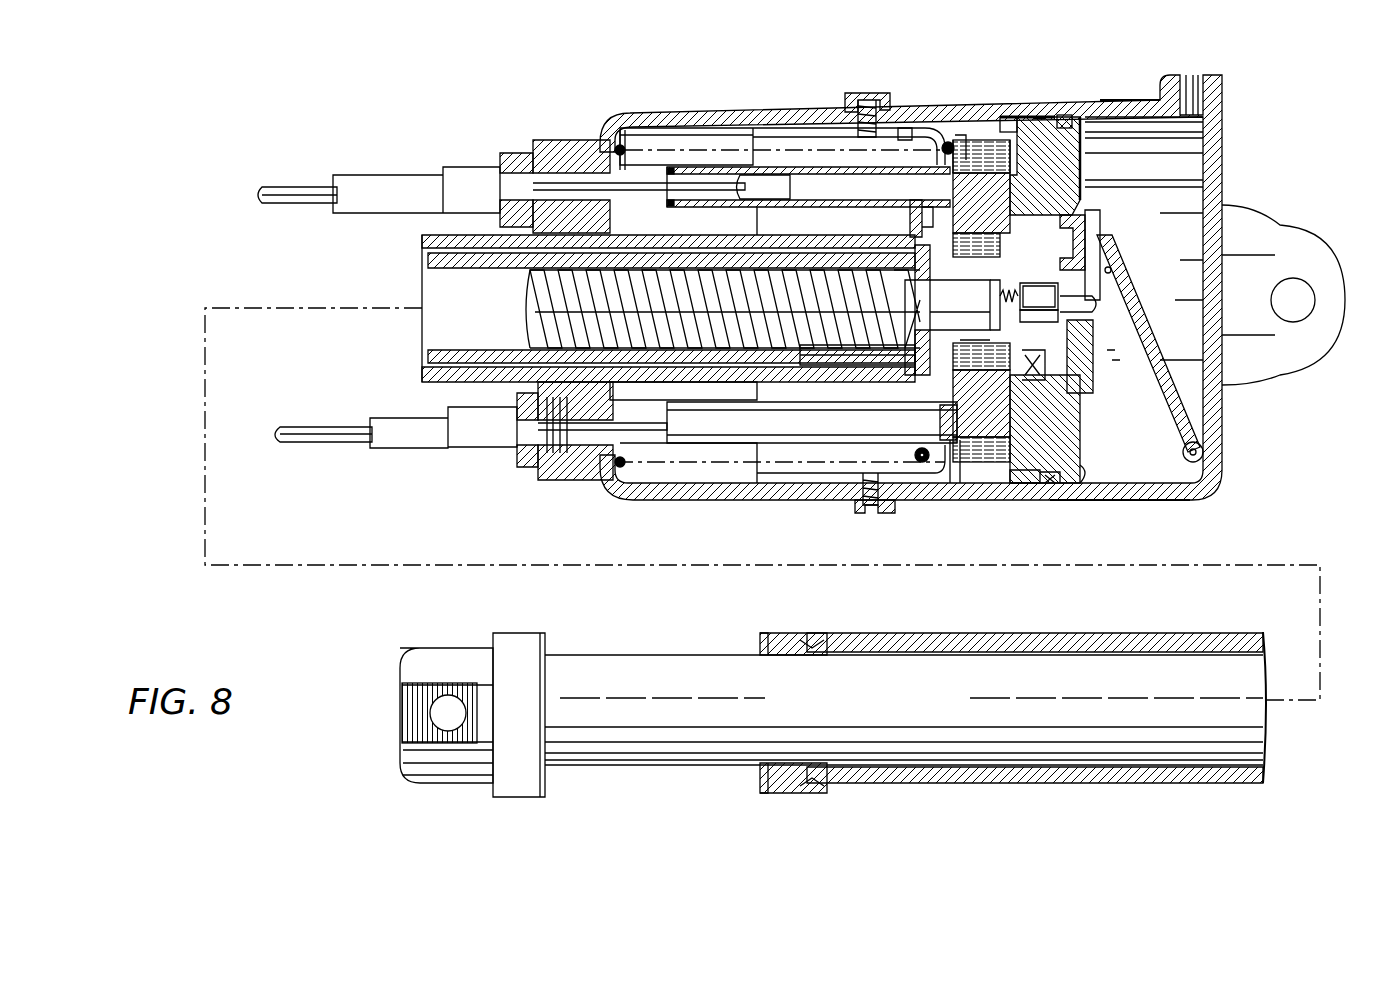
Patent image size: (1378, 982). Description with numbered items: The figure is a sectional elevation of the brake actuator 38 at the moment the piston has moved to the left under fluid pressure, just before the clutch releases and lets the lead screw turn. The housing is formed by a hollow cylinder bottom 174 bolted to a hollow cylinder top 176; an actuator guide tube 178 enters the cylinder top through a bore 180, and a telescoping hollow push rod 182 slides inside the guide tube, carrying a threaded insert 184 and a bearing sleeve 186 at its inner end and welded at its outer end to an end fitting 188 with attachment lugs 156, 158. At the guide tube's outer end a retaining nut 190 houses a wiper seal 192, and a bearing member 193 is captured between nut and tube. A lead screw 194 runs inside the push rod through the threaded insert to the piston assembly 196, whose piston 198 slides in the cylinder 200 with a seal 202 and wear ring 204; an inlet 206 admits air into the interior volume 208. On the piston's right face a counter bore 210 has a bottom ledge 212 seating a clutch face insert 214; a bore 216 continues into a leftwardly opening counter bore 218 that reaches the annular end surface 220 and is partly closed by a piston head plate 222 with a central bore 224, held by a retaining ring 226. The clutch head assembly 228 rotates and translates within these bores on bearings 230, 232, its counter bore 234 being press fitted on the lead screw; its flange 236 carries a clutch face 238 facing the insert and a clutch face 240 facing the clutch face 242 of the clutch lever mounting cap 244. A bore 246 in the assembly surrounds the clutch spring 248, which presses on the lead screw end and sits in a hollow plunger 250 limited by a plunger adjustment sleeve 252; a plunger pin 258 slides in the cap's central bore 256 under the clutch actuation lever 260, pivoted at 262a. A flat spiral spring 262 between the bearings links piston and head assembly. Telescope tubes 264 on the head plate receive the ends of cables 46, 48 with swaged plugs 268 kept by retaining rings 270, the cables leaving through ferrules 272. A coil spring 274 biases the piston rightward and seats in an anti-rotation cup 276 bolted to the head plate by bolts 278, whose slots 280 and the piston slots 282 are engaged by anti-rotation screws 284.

The brake actuator 38 is at (1112, 105).
The cable 46 is at (292, 428).
The cable 48 is at (292, 188).
The attachment lug 156 is at (856, 494).
The attachment lug 158 is at (1272, 355).
The cylinder bottom 174 is at (1052, 485).
The cylinder top 176 is at (685, 118).
The actuator guide tube 178 is at (426, 240).
The bore 180 is at (607, 310).
The push rod 182 is at (430, 258).
The threaded insert 184 is at (848, 366).
The bearing sleeve 186 is at (702, 385).
The end fitting 188 is at (548, 640).
The retaining nut 190 is at (778, 635).
The wiper seal 192 is at (766, 632).
The bearing member 193 is at (812, 642).
The lead screw 194 is at (530, 298).
The piston assembly 196 is at (1020, 485).
The piston 198 is at (1086, 488).
The cylinder 200 is at (1148, 500).
The seal 202 is at (1068, 115).
The wear ring 204 is at (1044, 116).
The inlet 206 is at (1192, 78).
The interior volume 208 is at (1180, 152).
The counter bore 210 is at (1035, 235).
The bottom ledge 212 is at (981, 203).
The clutch face insert 214 is at (981, 416).
The bore 216 is at (1010, 362).
The counter bore 218 is at (962, 485).
The annular end surface 220 is at (940, 480).
The piston head plate 222 is at (950, 140).
The central bore 224 is at (922, 215).
The retaining ring 226 is at (966, 135).
The clutch head assembly 228 is at (1085, 248).
The bearing 230 is at (925, 362).
The bearing 232 is at (995, 322).
The counter bore 234 is at (912, 248).
The flange 236 is at (1098, 235).
The clutch face 238 is at (1041, 325).
The clutch face 240 is at (1038, 388).
The clutch face 242 is at (1060, 385).
The clutch lever mounting cap 244 is at (1105, 245).
The bore 246 is at (992, 240).
The clutch spring 248 is at (995, 296).
The plunger 250 is at (1031, 296).
The plunger adjustment sleeve 252 is at (1080, 355).
The central bore 256 is at (1115, 335).
The plunger pin 258 is at (1100, 305).
The clutch actuation lever 260 is at (1200, 440).
The flat spiral spring 262 is at (975, 165).
The pivot 262a is at (1112, 270).
The telescope tube 264 is at (742, 200).
The plug 268 is at (762, 192).
The retaining ring 270 is at (670, 196).
The ferrule 272 is at (512, 160).
The coil spring 274 is at (622, 130).
The anti-rotation cup 276 is at (905, 128).
The bolt 278 is at (914, 212).
The slot 280 is at (800, 128).
The slot 282 is at (1008, 120).
The anti-rotation screw 284 is at (860, 95).